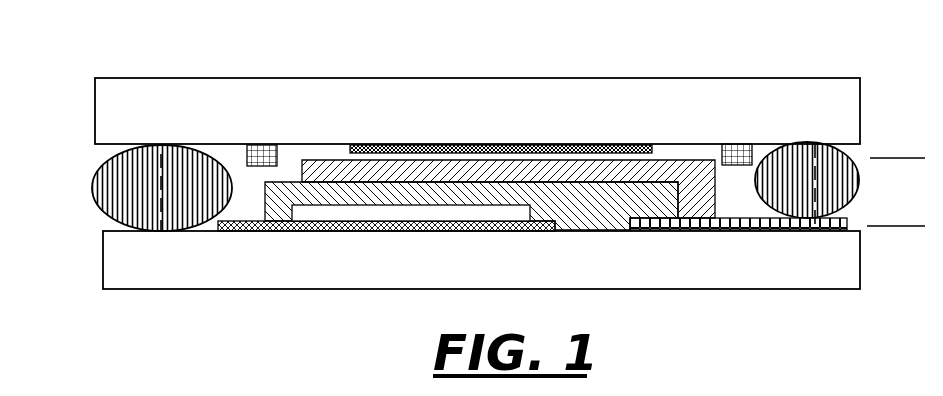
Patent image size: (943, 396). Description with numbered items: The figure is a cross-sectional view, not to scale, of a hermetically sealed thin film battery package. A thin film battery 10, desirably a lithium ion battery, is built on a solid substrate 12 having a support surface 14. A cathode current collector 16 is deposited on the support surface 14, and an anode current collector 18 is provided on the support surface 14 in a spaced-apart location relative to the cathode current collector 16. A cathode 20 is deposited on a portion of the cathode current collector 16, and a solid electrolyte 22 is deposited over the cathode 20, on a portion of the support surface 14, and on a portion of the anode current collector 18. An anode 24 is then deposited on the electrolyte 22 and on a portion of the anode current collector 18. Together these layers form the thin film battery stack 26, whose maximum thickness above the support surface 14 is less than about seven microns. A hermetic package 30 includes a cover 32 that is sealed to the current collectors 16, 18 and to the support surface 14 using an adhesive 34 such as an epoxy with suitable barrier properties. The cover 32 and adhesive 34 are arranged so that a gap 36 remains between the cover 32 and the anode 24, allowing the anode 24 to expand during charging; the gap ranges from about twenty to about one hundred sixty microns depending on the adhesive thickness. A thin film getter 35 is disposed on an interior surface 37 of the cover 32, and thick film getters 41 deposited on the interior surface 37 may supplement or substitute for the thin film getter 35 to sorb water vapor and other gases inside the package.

The thin film battery 10 is at (627, 148).
The solid substrate 12 is at (433, 269).
The support surface 14 is at (98, 223).
The cathode current collector 16 is at (228, 232).
The anode current collector 18 is at (727, 222).
The cathode 20 is at (337, 210).
The solid electrolyte 22 is at (576, 217).
The anode 24 is at (537, 165).
The thin film battery stack 26 is at (895, 165).
The hermetic package 30 is at (395, 280).
The cover 32 is at (366, 122).
The adhesive 34 is at (150, 198).
The thin film getter 35 is at (450, 148).
The gap 36 is at (316, 145).
The interior surface 37 is at (686, 150).
The thick film getter 41 is at (257, 146).